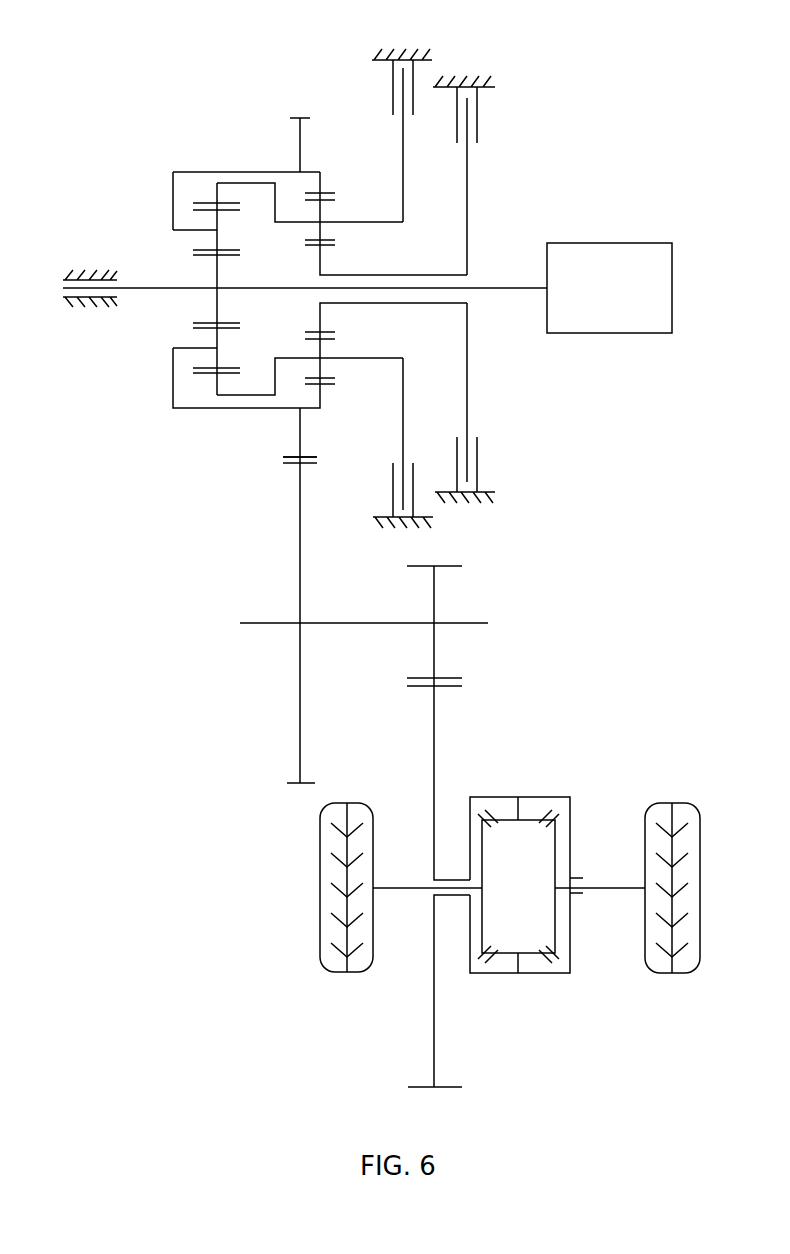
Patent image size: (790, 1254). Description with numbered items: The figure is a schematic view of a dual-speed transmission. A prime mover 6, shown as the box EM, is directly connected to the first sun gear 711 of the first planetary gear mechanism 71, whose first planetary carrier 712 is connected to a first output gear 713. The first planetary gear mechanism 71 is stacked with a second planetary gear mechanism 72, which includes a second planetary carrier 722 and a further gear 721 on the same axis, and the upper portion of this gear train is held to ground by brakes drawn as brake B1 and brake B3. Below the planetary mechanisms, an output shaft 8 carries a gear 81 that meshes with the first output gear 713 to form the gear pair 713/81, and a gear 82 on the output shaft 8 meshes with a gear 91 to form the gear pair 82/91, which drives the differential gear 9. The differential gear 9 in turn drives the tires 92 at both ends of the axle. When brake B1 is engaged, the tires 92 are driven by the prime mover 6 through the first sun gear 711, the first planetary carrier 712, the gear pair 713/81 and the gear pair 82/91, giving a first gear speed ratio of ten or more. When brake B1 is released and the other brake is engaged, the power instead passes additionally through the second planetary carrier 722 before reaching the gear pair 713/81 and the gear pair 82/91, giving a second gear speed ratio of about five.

The prime mover 6 is at (610, 243).
The first planetary gear mechanism 71 is at (155, 213).
The first sun gear 711 is at (213, 265).
The first planetary carrier 712 is at (172, 183).
The first output gear 713 is at (296, 459).
The second planetary gear mechanism 72 is at (288, 188).
The sun gear of second planetary gear set 721 is at (316, 248).
The second planetary carrier 722 is at (385, 215).
The output shaft 8 is at (275, 620).
The gear 81 is at (296, 464).
The gear 82 is at (450, 566).
The differential gear 9 is at (541, 796).
The gear 91 is at (437, 735).
The tires 92 is at (320, 840).
The brake B1 is at (402, 268).
The third brake B3 is at (465, 268).